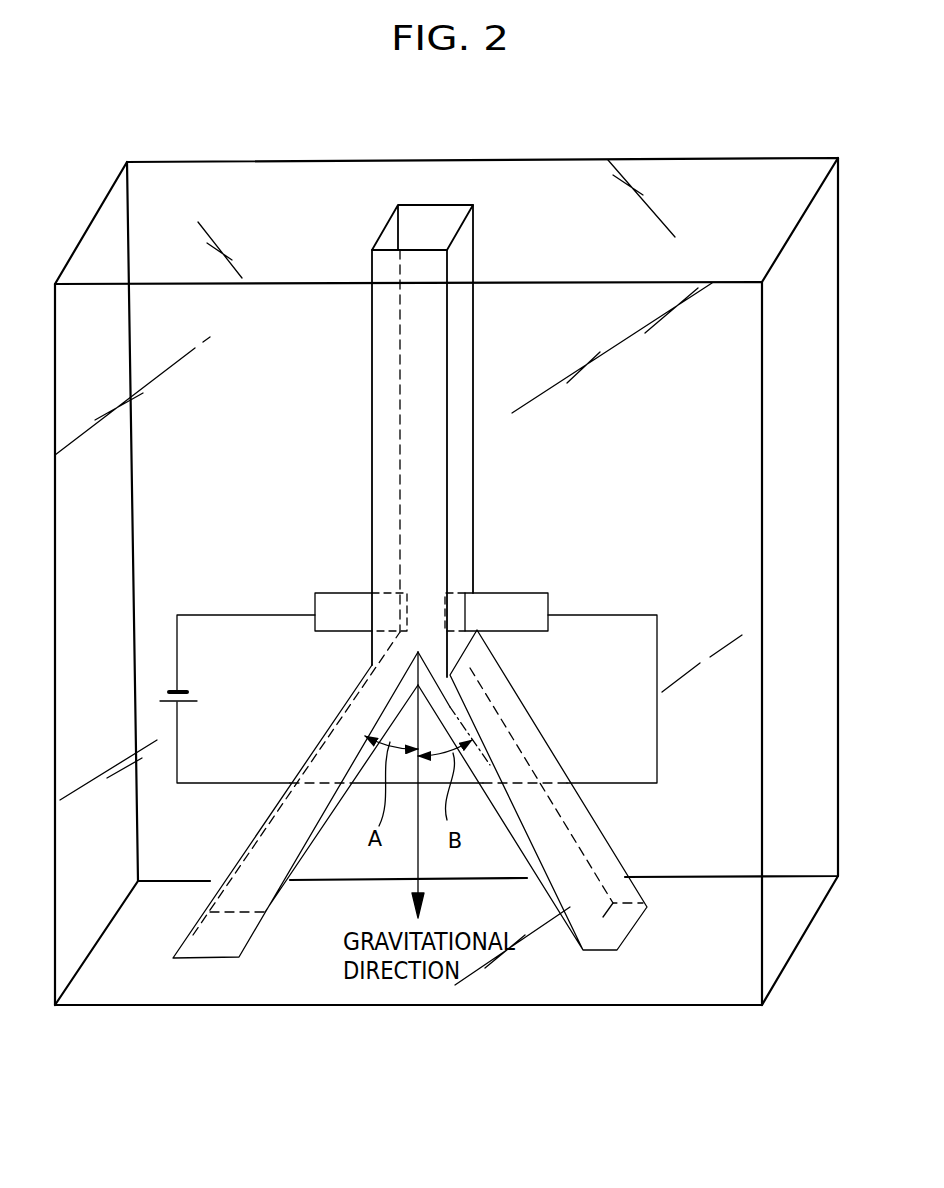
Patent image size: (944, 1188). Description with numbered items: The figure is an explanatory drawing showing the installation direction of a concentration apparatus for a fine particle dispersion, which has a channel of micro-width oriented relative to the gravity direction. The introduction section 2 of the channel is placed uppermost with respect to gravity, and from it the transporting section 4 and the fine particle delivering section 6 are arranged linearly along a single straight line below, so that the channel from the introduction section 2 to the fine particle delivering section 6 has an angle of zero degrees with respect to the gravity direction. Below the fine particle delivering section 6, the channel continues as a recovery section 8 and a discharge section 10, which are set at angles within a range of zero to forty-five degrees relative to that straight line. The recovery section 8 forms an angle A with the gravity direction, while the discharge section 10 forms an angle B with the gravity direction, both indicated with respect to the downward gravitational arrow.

The introduction section 2 is at (392, 248).
The transporting section 4 is at (410, 456).
The fine particle delivering section 6 is at (422, 628).
The recovery section 8 is at (500, 767).
The discharge section 10 is at (342, 757).